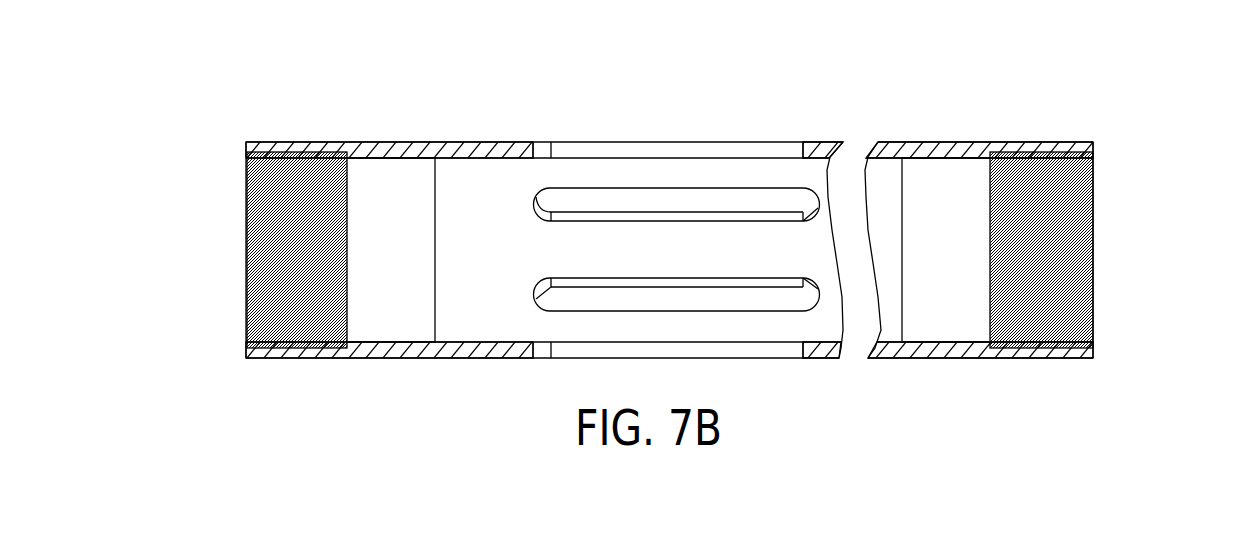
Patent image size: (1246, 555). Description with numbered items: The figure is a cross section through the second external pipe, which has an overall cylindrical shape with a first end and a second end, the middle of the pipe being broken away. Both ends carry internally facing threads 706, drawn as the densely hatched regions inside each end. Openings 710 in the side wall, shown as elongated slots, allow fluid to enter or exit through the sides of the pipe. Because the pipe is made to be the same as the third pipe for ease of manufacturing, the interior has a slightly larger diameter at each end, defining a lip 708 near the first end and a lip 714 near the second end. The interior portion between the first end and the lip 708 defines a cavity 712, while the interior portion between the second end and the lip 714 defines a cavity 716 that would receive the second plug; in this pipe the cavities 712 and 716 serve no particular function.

The internally facing threads 706 is at (228, 232).
The lip 708 is at (910, 147).
The openings 710 is at (668, 193).
The cavity 712 is at (938, 272).
The lip 714 is at (443, 137).
The cavity 716 is at (367, 287).